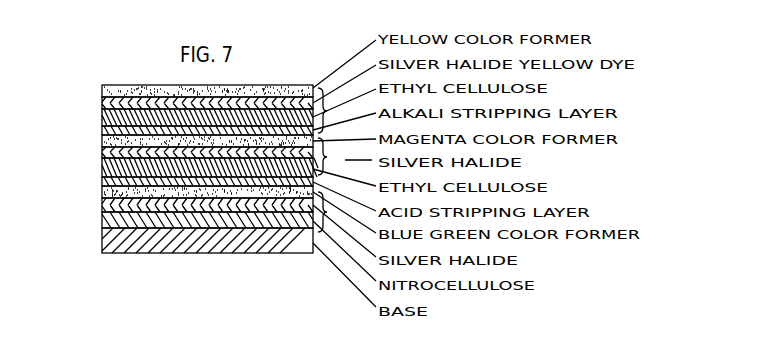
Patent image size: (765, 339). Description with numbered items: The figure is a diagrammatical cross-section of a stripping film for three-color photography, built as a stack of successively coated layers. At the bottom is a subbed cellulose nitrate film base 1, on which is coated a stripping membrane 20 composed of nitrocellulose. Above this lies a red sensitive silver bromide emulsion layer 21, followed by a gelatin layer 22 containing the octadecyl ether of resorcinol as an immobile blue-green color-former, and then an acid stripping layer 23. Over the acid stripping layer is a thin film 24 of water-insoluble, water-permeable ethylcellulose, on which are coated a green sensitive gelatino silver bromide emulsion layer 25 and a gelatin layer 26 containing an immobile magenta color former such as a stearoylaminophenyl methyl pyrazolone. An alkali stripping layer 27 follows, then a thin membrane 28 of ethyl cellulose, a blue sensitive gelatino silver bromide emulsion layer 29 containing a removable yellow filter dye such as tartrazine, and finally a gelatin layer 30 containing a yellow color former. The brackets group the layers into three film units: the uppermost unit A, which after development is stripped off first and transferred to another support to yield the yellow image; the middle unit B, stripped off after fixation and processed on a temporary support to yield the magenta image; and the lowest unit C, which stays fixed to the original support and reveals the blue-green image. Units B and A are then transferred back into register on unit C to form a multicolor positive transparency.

The cellulose nitrate film base 1 is at (102, 242).
The stripping membrane 20 is at (102, 220).
The red sensitive silver bromide emulsion layer 21 is at (102, 205).
The gelatin layer containing blue-green color-former 22 is at (102, 192).
The acid stripping layer 23 is at (102, 181).
The ethylcellulose film 24 is at (102, 166).
The green sensitive gelatino silver bromide emulsion layer 25 is at (102, 152).
The gelatin layer containing magenta color former 26 is at (102, 140).
The alkali stripping layer 27 is at (102, 129).
The ethyl cellulose membrane 28 is at (102, 114).
The blue sensitive gelatino silver bromide emulsion layer 29 is at (102, 100).
The gelatin layer containing yellow color former 30 is at (102, 86).
The film unit A is at (330, 110).
The film unit B is at (330, 156).
The film unit C is at (329, 212).